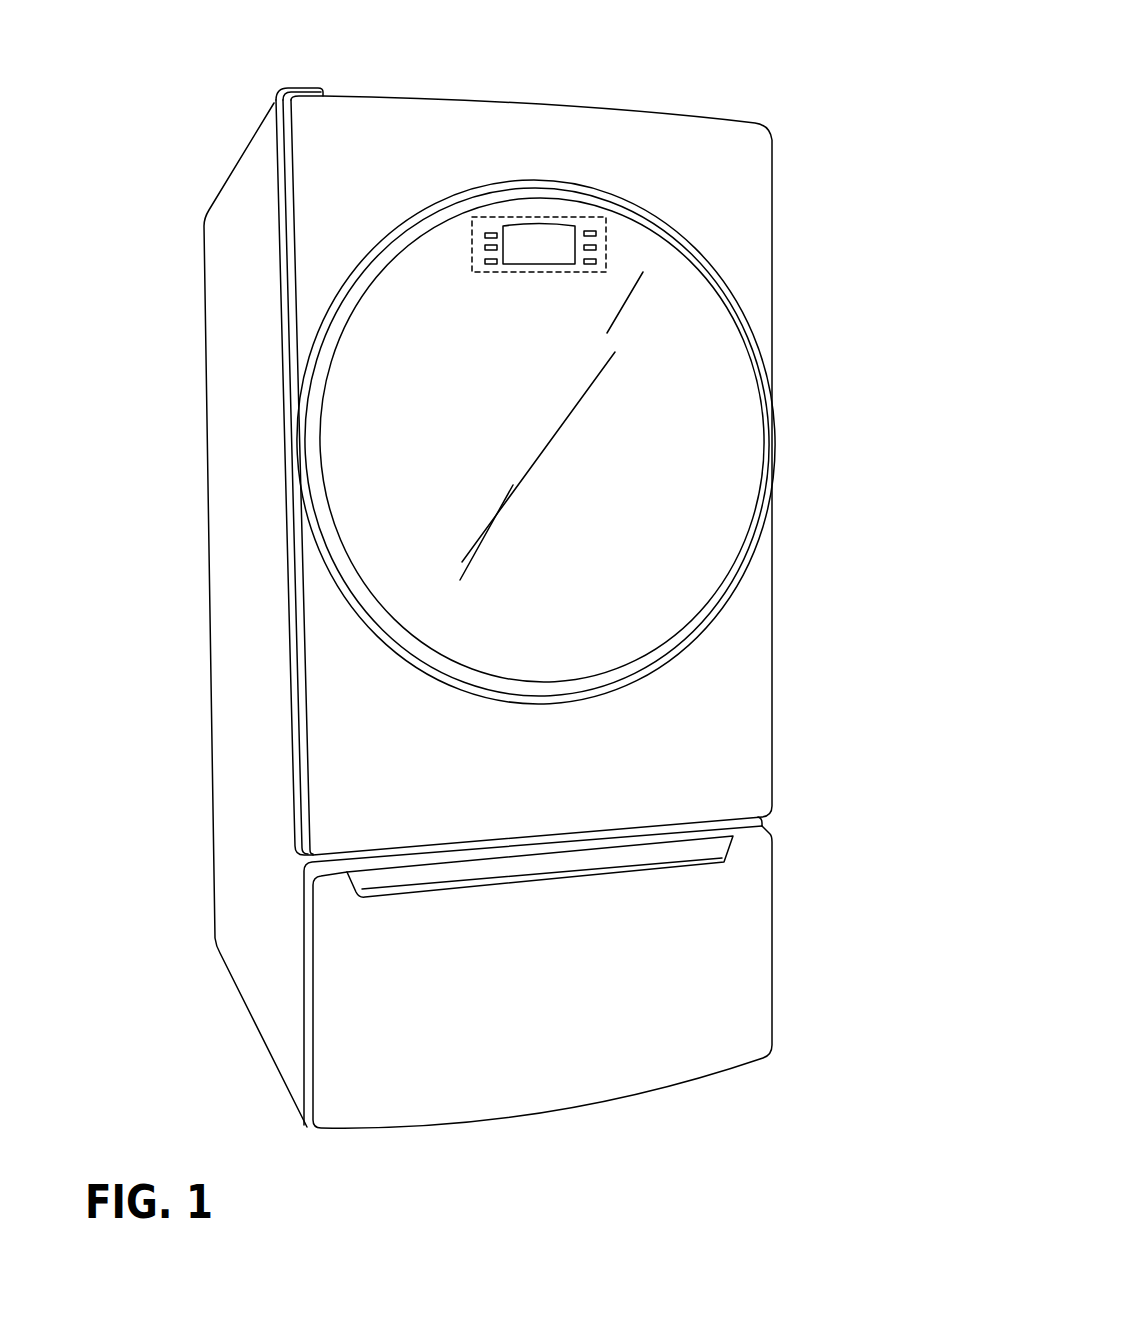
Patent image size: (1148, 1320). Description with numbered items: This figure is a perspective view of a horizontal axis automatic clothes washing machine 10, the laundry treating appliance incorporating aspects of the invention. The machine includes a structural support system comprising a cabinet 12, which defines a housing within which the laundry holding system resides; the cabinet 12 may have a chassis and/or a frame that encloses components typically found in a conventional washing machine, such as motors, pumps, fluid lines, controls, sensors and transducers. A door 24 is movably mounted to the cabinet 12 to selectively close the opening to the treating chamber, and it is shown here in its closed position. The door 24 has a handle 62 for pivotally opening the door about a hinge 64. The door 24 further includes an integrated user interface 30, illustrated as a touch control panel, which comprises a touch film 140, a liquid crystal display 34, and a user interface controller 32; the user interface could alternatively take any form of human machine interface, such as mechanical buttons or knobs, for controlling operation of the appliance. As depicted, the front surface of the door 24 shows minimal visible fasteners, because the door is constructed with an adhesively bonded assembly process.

The washing machine 10 is at (517, 572).
The cabinet 12 is at (202, 305).
The door 24 is at (515, 445).
The integrated user interface 30 is at (632, 263).
The user interface controller 32 is at (655, 153).
The liquid crystal display 34 is at (535, 223).
The handle 62 is at (775, 443).
The hinge 64 is at (302, 457).
The touch film 140 is at (592, 227).